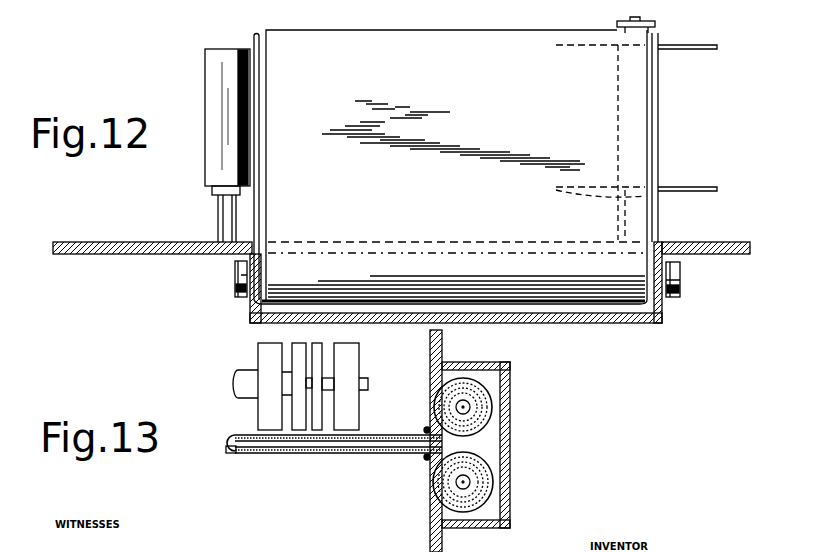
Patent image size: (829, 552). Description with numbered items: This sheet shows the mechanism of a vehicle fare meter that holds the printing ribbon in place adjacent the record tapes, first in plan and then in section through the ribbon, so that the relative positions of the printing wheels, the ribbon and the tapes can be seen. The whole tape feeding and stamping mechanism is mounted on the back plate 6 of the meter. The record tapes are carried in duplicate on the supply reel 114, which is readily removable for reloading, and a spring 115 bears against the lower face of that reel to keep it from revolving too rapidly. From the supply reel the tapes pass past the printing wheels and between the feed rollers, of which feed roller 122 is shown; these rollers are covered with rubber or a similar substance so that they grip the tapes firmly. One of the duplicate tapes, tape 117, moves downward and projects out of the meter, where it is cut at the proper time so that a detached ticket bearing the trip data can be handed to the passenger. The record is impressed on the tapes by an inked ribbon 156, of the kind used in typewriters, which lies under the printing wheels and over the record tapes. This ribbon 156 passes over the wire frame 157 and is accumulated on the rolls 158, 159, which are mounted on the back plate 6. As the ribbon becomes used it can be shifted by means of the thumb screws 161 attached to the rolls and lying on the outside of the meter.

In FIG. 12, the back plate 6 is at (133, 256).
In FIG. 13, the back plate 6 is at (443, 347).
In FIG. 12, the supply reel 114 is at (672, 50).
In FIG. 12, the spring 115 is at (660, 197).
In FIG. 13, the record tape 117 is at (310, 458).
In FIG. 12, the feed roller 122 is at (200, 145).
In FIG. 12, the inked ribbon 156 is at (456, 167).
In FIG. 13, the inked ribbon 156 is at (245, 436).
In FIG. 12, the wire frame 157 is at (656, 34).
In FIG. 13, the wire frame 157 is at (256, 458).
In FIG. 12, the roll 158 is at (602, 295).
In FIG. 13, the roll 158 is at (490, 392).
In FIG. 13, the roll 159 is at (490, 482).
In FIG. 12, the thumb screws 161 is at (234, 277).